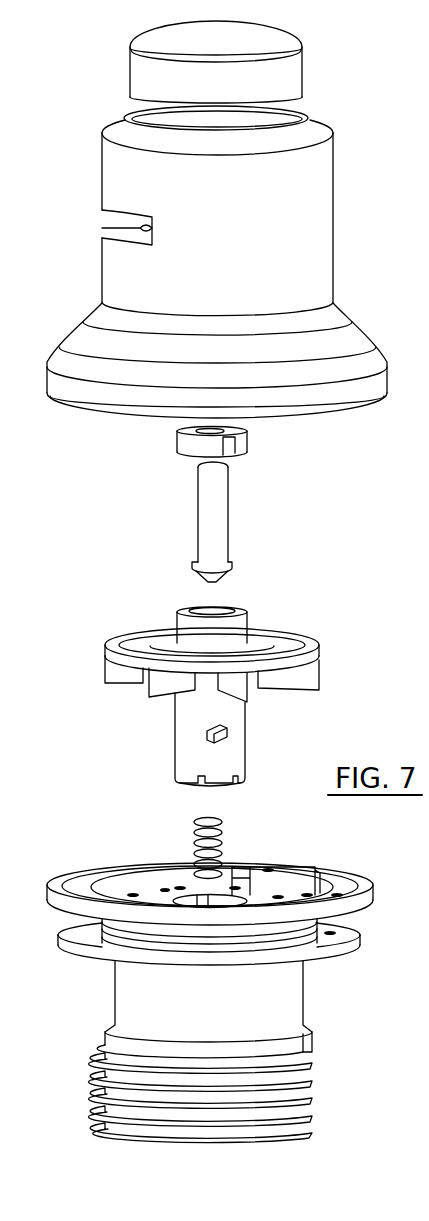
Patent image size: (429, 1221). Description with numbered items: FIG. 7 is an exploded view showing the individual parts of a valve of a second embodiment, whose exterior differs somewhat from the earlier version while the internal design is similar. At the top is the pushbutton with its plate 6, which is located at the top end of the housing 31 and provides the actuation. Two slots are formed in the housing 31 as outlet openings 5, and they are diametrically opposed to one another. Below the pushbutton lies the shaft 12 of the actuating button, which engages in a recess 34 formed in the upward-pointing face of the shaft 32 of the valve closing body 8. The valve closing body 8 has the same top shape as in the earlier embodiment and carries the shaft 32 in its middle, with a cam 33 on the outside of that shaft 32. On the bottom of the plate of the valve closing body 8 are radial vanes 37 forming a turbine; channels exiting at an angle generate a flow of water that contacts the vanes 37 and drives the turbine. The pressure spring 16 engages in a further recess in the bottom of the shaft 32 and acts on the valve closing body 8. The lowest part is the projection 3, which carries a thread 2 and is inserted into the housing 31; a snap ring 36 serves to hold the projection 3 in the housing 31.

The plate 6 is at (258, 46).
The housing 31 is at (310, 193).
The outlet openings 5 is at (118, 220).
The shaft of the actuating button 12 is at (213, 508).
The recess 34 is at (222, 603).
The valve closing body 8 is at (298, 645).
The radial vanes 37 is at (303, 677).
The shaft 32 is at (193, 760).
The cam 33 is at (228, 732).
The pressure spring 16 is at (223, 848).
The snap ring 36 is at (360, 893).
The projection 3 is at (278, 990).
The thread 2 is at (307, 1063).